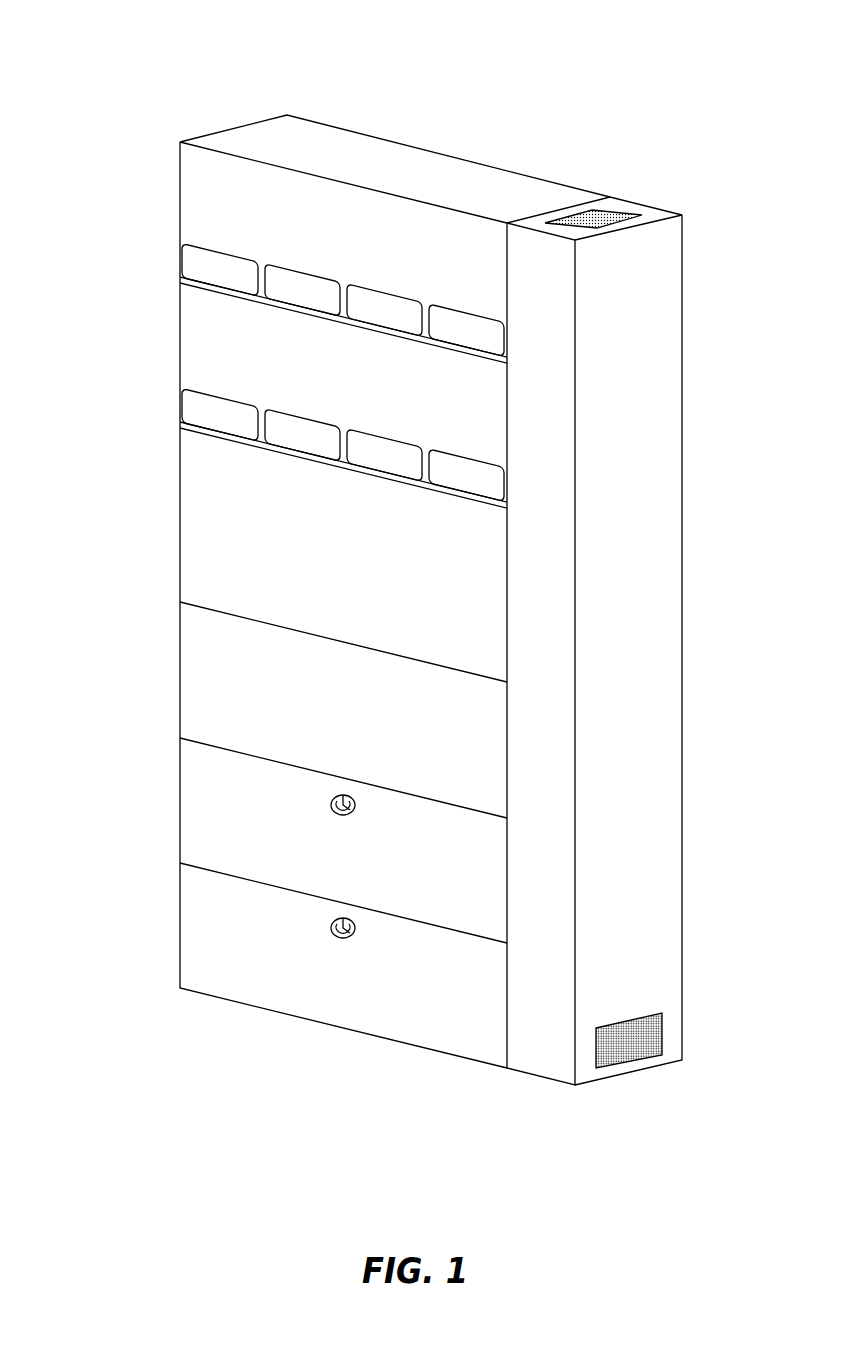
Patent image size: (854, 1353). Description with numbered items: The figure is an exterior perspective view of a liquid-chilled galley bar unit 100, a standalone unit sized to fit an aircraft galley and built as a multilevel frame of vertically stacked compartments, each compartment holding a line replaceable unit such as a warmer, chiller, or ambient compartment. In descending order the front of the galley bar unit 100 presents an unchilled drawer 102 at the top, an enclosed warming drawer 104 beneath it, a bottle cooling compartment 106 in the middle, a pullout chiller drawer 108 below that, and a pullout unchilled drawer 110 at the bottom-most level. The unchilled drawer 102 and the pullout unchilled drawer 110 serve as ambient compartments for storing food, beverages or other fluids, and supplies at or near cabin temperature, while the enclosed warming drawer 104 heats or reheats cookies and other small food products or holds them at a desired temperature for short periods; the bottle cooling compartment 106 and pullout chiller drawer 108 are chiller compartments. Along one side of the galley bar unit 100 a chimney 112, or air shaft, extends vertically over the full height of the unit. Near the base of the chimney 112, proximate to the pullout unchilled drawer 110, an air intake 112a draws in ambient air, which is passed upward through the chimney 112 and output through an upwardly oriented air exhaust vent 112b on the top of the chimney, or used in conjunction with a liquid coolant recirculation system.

The liquid-chilled galley bar unit 100 is at (100, 73).
The unchilled drawer 102 is at (195, 228).
The enclosed warming drawer 104 is at (200, 357).
The bottle cooling compartment 106 is at (202, 580).
The pullout chiller drawer 108 is at (208, 838).
The pullout unchilled drawer 110 is at (215, 961).
The chimney 112 is at (662, 700).
The air intake 112a is at (650, 1040).
The air exhaust vent 112b is at (615, 210).